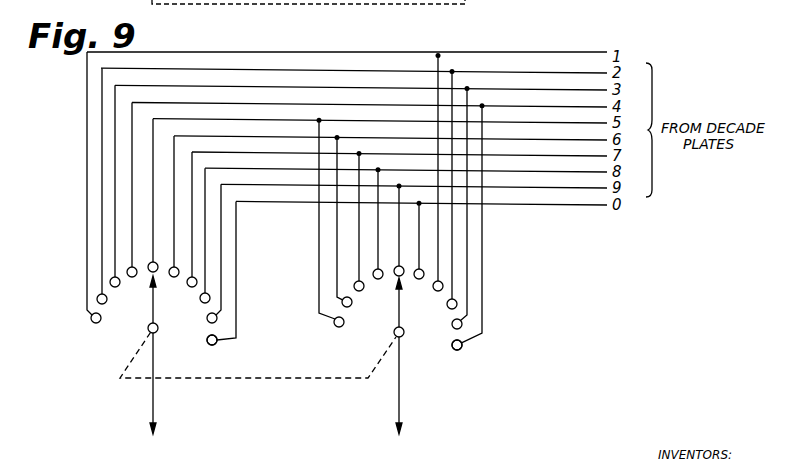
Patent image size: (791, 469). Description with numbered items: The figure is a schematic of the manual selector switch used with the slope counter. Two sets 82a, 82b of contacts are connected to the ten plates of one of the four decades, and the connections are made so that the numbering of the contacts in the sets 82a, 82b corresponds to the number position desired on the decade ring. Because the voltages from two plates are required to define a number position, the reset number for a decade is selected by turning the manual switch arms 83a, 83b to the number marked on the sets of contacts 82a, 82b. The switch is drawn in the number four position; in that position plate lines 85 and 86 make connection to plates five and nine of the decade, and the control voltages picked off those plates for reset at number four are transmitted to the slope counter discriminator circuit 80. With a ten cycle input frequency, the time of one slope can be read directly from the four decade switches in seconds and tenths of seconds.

The plate line 85 is at (152, 242).
The plate line 86 is at (398, 227).
The manual switch arm 83a is at (154, 299).
The manual switch arm 83b is at (396, 313).
The set of contacts 82a is at (212, 345).
The set of contacts 82b is at (457, 350).
The slope counter discriminator circuit 80 is at (297, 394).